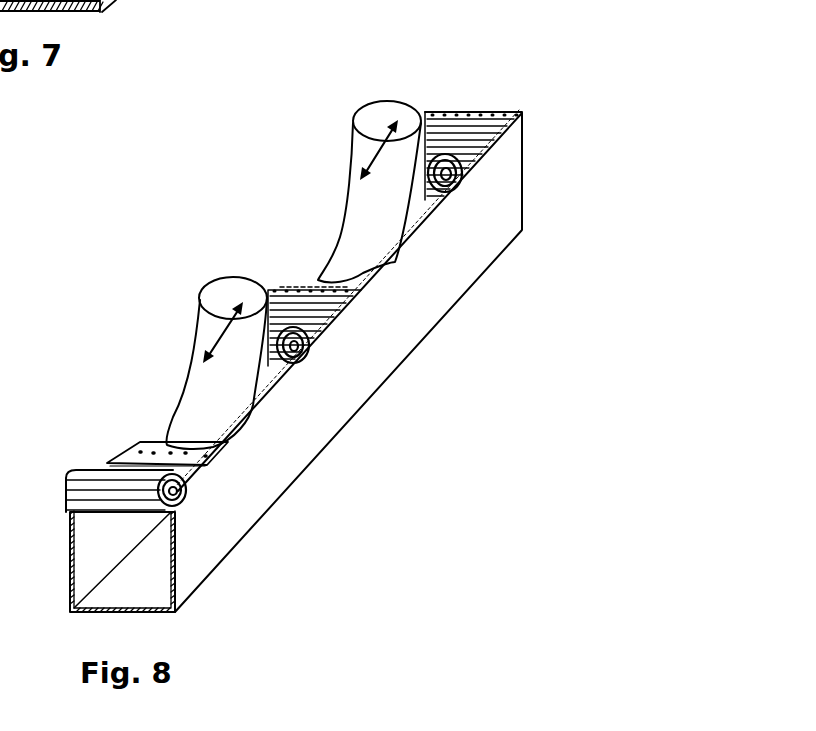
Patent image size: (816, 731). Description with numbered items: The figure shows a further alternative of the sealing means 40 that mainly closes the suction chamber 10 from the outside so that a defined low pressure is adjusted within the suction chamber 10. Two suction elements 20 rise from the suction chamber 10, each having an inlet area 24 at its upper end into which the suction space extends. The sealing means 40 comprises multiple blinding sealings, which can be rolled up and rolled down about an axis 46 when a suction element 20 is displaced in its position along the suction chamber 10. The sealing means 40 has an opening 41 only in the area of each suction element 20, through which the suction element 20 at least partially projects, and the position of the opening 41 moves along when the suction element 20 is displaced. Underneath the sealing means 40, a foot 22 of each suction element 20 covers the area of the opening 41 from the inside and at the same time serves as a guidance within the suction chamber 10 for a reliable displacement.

The suction chamber 10 is at (192, 560).
The suction element 20 is at (348, 185).
The foot 22 is at (360, 280).
The inlet area 24 is at (368, 122).
The sealing means 40 is at (477, 136).
The opening 41 is at (160, 437).
The axis 46 is at (462, 185).